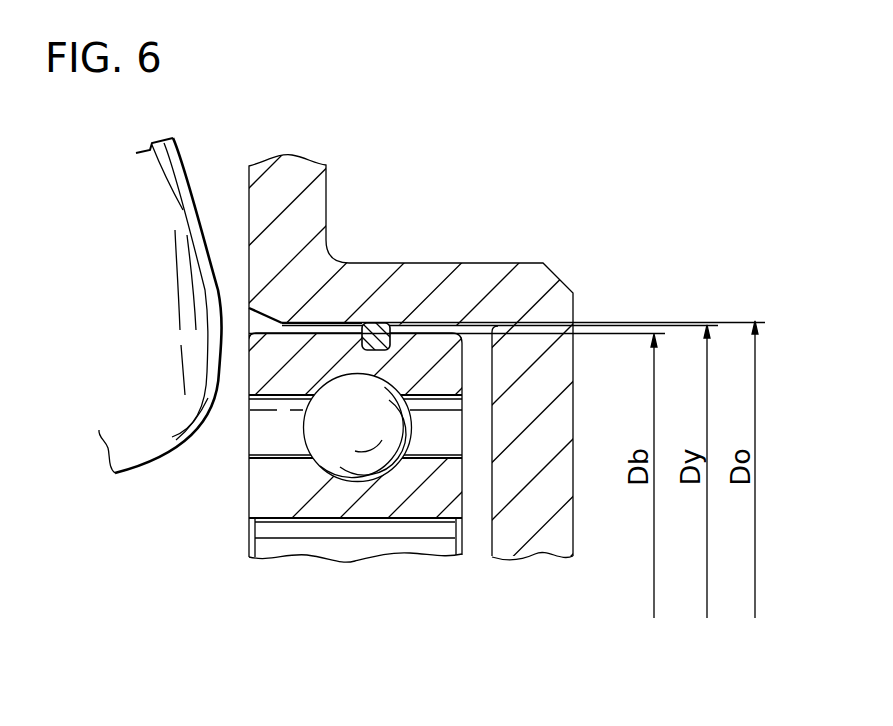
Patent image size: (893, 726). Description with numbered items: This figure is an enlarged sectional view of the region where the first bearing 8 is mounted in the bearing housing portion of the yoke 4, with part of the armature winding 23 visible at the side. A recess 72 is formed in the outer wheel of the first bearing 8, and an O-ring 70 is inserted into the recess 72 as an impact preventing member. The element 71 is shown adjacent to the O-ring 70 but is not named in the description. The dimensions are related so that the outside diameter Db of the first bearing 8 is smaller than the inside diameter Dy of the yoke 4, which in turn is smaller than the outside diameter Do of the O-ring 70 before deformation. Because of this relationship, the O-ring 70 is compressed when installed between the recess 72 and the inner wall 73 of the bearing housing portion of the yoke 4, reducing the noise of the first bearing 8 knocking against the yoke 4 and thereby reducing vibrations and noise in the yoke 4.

The yoke 4 is at (315, 196).
The first bearing 8 is at (413, 493).
The winding 23 is at (167, 188).
The O-ring 70 is at (523, 277).
The seal plate 71 is at (437, 350).
The recess 72 is at (374, 321).
The inner wall 73 is at (318, 324).